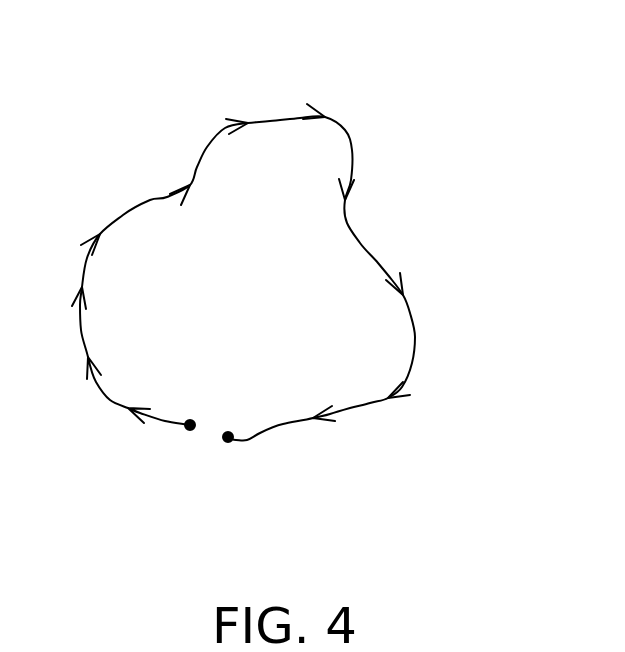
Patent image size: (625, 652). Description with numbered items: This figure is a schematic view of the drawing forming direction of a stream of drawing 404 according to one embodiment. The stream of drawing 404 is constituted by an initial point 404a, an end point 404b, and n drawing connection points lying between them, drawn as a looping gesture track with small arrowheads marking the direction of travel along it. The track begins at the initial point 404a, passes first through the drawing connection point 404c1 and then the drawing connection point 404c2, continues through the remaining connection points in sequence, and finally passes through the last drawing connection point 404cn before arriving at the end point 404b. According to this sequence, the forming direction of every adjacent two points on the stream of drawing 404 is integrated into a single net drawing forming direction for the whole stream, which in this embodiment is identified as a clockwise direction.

The stream of drawing 404 is at (305, 85).
The initial point 404a is at (172, 455).
The end point 404b is at (243, 467).
The drawing connection point 404c1 is at (170, 403).
The drawing connection point 404c2 is at (128, 371).
The drawing connection point 404cn is at (306, 439).